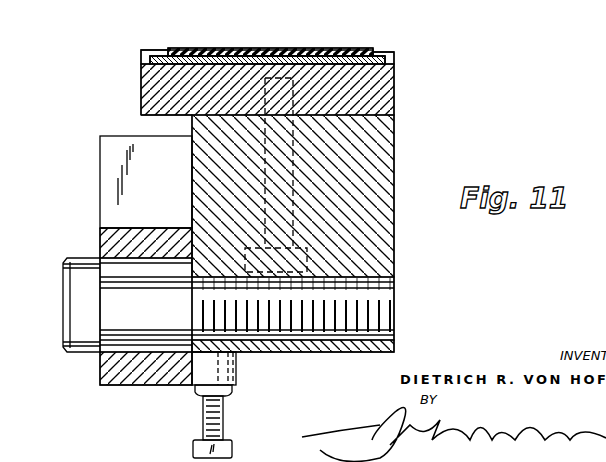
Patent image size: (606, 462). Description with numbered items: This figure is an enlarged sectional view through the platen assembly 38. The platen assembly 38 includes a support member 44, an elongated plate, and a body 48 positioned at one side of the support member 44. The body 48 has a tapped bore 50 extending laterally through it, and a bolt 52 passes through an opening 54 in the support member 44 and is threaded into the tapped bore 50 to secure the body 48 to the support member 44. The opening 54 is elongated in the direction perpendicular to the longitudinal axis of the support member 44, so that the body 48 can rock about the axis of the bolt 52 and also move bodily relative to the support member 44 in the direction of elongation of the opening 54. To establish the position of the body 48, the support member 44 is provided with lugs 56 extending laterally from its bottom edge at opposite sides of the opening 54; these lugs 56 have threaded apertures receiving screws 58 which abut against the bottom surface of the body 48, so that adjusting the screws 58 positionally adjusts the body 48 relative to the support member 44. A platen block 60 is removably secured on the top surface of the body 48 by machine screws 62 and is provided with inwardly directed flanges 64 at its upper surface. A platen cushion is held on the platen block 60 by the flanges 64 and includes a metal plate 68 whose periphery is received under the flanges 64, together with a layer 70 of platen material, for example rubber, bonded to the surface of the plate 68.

The platen assembly 38 is at (72, 148).
The support member 44 is at (108, 238).
The body 48 is at (385, 173).
The tapped bore 50 is at (385, 282).
The bolt 52 is at (327, 330).
The opening 54 is at (110, 345).
The lugs 56 is at (226, 382).
The screws 58 is at (223, 422).
The platen block 60 is at (380, 82).
The machine screws 62 is at (282, 162).
The flanges 64 is at (163, 50).
The metal plate 68 is at (325, 60).
The layer of platen material 70 is at (277, 48).